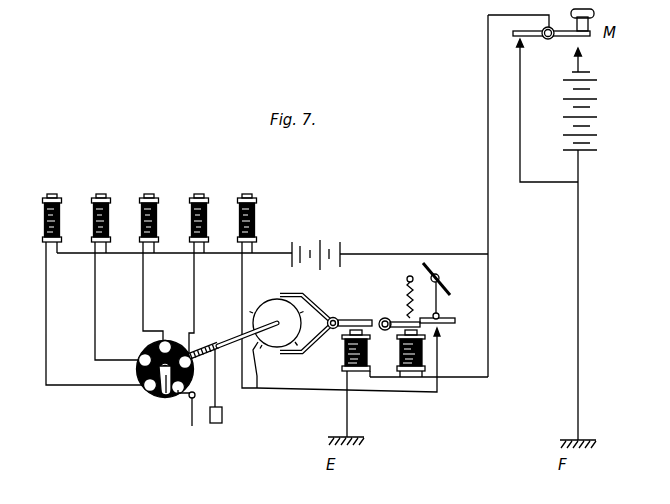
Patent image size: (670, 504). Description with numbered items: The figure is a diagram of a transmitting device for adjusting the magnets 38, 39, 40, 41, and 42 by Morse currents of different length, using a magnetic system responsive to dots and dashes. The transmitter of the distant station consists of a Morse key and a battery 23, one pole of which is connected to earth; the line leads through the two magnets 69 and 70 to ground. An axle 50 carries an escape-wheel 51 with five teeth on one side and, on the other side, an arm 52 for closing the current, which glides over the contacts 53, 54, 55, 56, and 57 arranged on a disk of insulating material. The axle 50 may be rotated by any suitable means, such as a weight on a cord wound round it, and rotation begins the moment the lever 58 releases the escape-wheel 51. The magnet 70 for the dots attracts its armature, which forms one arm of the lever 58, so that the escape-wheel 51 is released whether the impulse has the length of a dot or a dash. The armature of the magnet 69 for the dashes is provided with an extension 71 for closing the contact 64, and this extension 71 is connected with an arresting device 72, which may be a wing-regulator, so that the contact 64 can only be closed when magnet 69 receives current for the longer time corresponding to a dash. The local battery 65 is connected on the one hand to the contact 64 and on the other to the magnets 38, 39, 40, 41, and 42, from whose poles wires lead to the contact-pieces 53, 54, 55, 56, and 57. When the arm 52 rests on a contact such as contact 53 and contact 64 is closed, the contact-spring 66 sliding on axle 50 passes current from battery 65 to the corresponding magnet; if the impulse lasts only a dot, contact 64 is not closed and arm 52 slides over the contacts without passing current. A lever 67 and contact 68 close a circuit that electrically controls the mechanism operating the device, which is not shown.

The magnet 38 is at (60, 222).
The magnet 39 is at (109, 222).
The magnet 40 is at (157, 222).
The magnet 41 is at (207, 222).
The magnet 42 is at (255, 222).
The battery 65 is at (316, 246).
The battery 23 is at (596, 99).
The escape-wheel 51 is at (277, 324).
The lever 58 is at (327, 307).
The axle 50 is at (223, 341).
The contact 55 is at (169, 343).
The contact 54 is at (139, 358).
The contact 56 is at (191, 354).
The contact 53 is at (147, 392).
The contact 57 is at (193, 392).
The arm 52 is at (163, 399).
The lever 67 is at (183, 401).
The contact 68 is at (201, 422).
The contact-spring 66 is at (258, 383).
The magnet 70 is at (345, 357).
The magnet 69 is at (409, 393).
The extension 71 is at (446, 320).
The arresting device 72 is at (428, 266).
The contact 64 is at (453, 333).